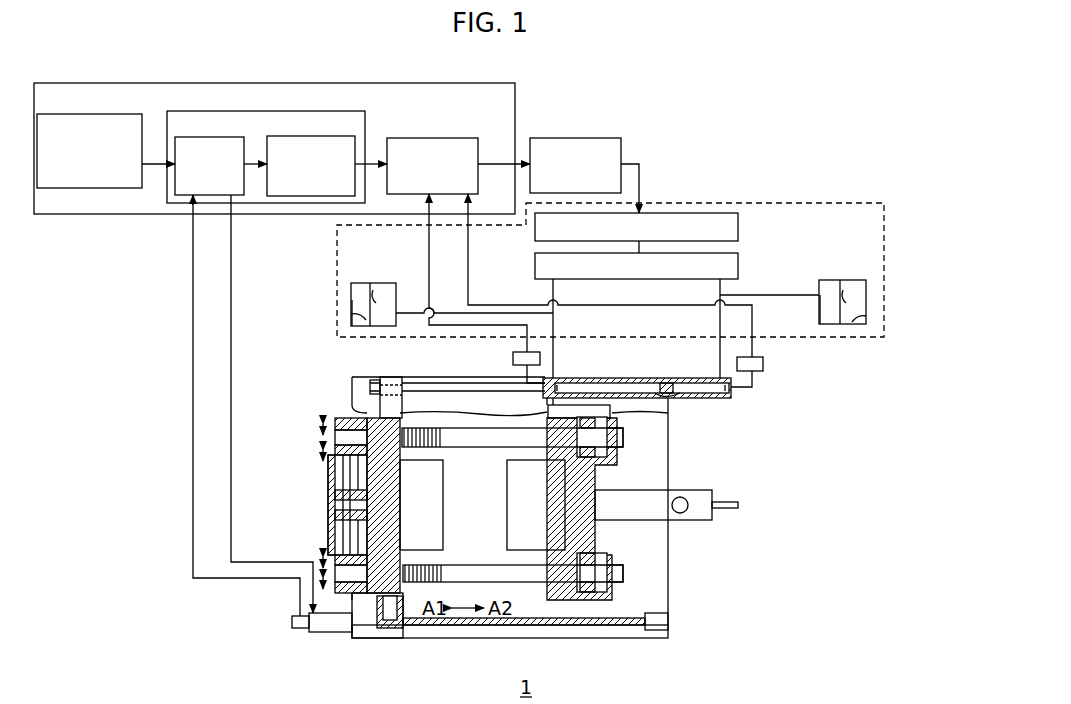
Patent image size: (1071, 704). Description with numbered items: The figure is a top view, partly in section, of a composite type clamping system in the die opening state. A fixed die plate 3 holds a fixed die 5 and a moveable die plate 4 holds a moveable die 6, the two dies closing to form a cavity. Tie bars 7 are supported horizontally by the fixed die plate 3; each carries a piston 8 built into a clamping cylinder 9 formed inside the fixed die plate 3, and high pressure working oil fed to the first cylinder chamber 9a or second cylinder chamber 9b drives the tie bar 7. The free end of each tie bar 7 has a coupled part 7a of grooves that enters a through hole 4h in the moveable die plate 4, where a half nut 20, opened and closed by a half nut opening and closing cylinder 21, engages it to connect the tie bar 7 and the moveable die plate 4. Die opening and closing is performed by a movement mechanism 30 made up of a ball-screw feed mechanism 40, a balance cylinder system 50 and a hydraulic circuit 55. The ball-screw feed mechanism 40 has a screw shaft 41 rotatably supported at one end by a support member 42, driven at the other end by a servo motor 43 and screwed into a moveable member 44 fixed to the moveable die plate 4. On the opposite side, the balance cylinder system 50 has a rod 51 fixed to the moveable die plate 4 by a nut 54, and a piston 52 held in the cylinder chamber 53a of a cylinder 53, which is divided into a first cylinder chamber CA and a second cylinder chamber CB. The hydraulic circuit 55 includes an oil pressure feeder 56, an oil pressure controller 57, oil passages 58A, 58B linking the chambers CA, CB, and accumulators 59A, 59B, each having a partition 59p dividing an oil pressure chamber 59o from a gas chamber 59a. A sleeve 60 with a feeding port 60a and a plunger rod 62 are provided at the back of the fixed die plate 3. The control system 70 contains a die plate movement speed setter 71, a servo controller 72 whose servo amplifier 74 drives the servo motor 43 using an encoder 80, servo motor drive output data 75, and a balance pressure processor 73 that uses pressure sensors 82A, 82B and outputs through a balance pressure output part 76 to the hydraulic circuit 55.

The fixed die plate 3 is at (566, 600).
The moveable die plate 4 is at (368, 600).
The through hole 4h is at (388, 620).
The fixed die 5 is at (522, 506).
The moveable die 6 is at (415, 505).
The tie bar 7 is at (490, 447).
The coupled part 7a is at (428, 447).
The piston 8 is at (598, 558).
The clamping cylinder 9 is at (605, 585).
The first cylinder chamber 9a is at (583, 600).
The second cylinder chamber 9b is at (598, 596).
The half nut 20 is at (346, 598).
The half nut opening and closing cylinder 21 is at (335, 533).
The movement mechanism 30 is at (622, 650).
The ball-screw feed mechanism 40 is at (418, 642).
The screw shaft 41 is at (503, 625).
The support member 42 is at (658, 630).
The servo motor 43 is at (322, 632).
The moveable member 44 is at (395, 600).
The balance cylinder system 50 is at (680, 408).
The rod 51 is at (414, 383).
The piston 52 is at (578, 383).
The cylinder 53 is at (625, 380).
The cylinder chamber 53a is at (692, 400).
The nut 54 is at (389, 377).
The hydraulic circuit 55 is at (720, 203).
The oil pressure feeder 56 is at (738, 230).
The oil pressure controller 57 is at (738, 266).
The oil passage 58A is at (553, 294).
The oil passage 58B is at (720, 298).
The accumulator 59A is at (351, 306).
The accumulator 59B is at (866, 302).
The partition 59p is at (375, 290).
The gas chamber 59a is at (366, 322).
The oil pressure chamber 59o is at (374, 326).
The sleeve 60 is at (643, 490).
The feeding port 60a is at (684, 497).
The plunger rod 62 is at (725, 502).
The control system 70 is at (515, 94).
The die plate movement speed setter 71 is at (83, 188).
The servo controller 72 is at (174, 203).
The balance pressure processor 73 is at (440, 138).
The servo amplifier 74 is at (218, 196).
The servo motor drive output data 75 is at (323, 197).
The balance pressure output part 76 is at (584, 138).
The encoder 80 is at (292, 620).
The pressure sensor 82A is at (513, 360).
The pressure sensor 82B is at (763, 364).
The first cylinder chamber CA is at (549, 386).
The second cylinder chamber CB is at (672, 386).